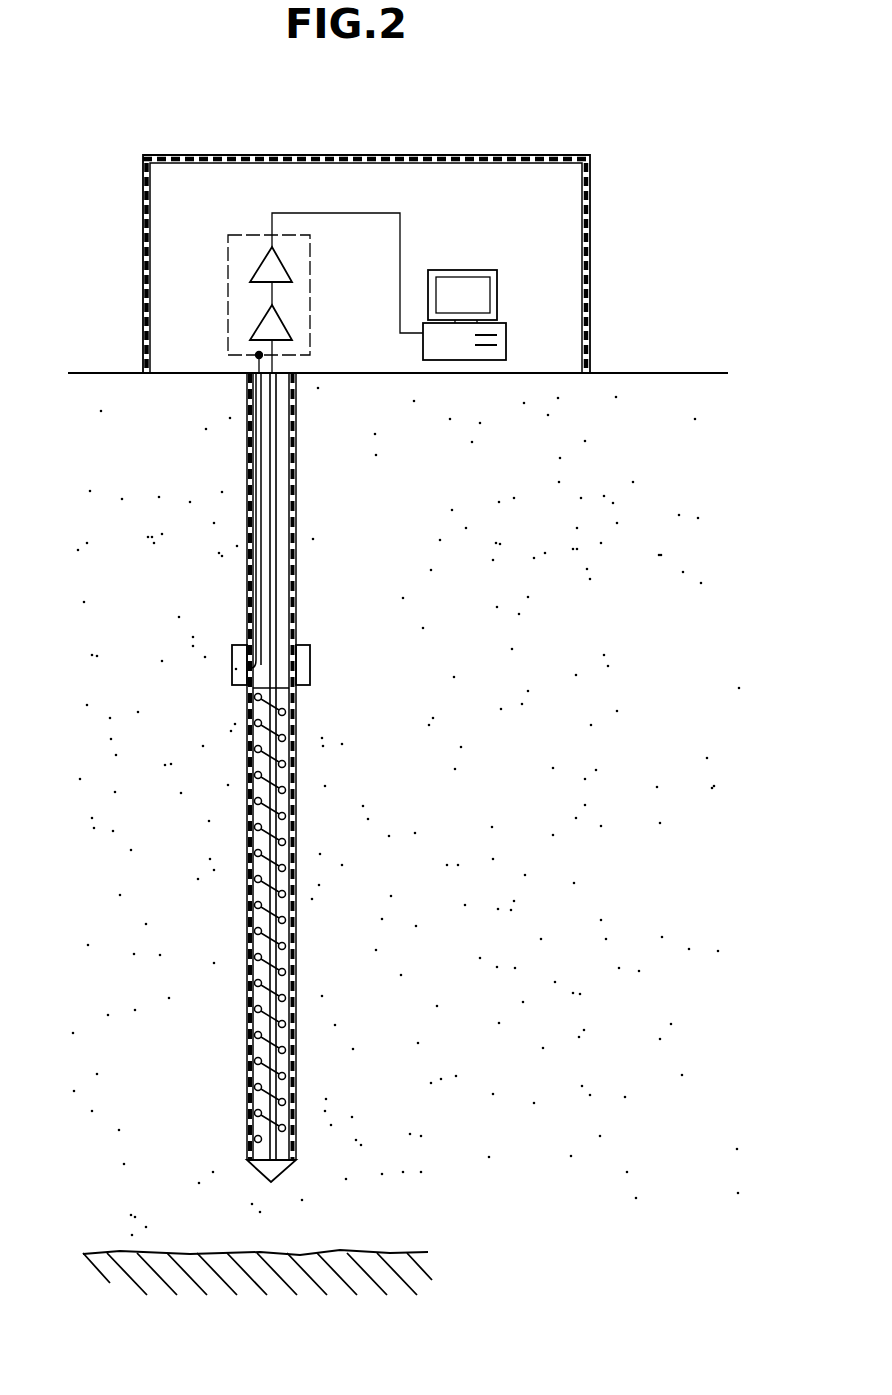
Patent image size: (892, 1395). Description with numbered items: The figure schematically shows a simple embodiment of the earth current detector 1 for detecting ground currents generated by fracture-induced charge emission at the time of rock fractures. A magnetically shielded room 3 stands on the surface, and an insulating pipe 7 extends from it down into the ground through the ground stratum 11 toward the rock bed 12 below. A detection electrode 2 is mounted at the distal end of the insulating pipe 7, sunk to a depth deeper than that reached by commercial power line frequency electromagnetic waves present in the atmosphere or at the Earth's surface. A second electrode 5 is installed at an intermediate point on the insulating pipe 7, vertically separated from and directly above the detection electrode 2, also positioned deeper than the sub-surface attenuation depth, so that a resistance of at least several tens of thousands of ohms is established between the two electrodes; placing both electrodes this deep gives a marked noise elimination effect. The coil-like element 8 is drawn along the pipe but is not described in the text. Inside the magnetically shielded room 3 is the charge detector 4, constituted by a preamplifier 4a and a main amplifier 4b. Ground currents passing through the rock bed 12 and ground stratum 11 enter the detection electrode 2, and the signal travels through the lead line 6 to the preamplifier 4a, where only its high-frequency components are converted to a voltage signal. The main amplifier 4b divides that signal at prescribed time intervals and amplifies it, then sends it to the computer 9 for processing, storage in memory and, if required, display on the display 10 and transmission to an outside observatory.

The earth current detector 1 is at (378, 190).
The detection electrode 2 is at (278, 1166).
The magnetically shielded room 3 is at (525, 157).
The charge detector 4 is at (290, 293).
The preamplifier 4a is at (283, 328).
The main amplifier 4b is at (283, 264).
The second electrode 5 is at (300, 667).
The lead line 6 is at (272, 618).
The insulating pipe 7 is at (295, 780).
The coil 8 is at (290, 1003).
The computer 9 is at (444, 360).
The display 10 is at (450, 295).
The ground stratum 11 is at (178, 1138).
The rock bed 12 is at (141, 1334).